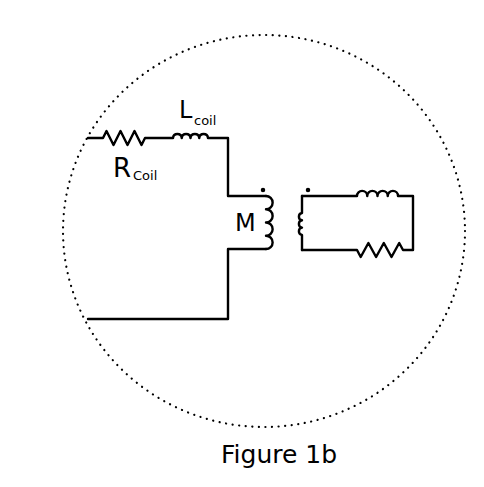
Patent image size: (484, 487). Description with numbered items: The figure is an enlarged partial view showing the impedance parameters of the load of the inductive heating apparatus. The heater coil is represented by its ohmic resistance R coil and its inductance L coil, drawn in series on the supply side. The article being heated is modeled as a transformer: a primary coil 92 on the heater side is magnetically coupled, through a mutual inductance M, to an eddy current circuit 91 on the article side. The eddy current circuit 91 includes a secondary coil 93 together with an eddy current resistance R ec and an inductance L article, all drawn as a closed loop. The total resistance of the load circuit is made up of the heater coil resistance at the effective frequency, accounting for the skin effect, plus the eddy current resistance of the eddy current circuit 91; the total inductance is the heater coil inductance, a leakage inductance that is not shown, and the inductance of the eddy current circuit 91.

The eddy current circuit 91 is at (337, 181).
The primary coil 92 is at (263, 212).
The secondary coil 93 is at (294, 216).